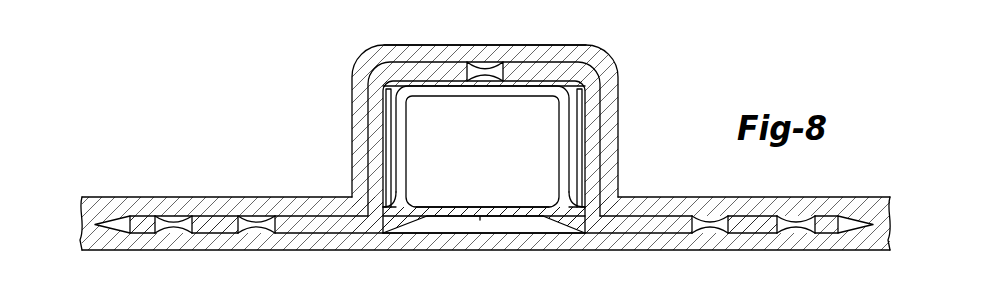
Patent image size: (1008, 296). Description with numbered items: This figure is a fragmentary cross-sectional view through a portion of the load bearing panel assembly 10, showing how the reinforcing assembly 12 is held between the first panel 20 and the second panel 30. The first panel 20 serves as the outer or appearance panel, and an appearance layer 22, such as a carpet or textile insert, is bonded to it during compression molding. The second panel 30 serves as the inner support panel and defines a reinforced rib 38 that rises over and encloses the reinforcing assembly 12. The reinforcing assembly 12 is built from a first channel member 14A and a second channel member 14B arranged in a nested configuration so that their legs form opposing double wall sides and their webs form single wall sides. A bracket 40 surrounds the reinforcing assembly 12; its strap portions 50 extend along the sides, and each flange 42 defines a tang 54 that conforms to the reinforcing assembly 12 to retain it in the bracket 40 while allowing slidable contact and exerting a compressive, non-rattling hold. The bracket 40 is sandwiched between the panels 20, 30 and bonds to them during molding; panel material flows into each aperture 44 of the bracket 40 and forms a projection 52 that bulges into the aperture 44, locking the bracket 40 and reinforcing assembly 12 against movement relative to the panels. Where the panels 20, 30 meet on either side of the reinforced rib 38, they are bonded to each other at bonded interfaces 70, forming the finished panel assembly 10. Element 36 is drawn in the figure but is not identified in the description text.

The panel assembly 10 is at (163, 105).
The reinforcing assembly 12 is at (481, 218).
The first channel member 14A is at (441, 97).
The second channel member 14B is at (525, 207).
The first panel 20 is at (710, 265).
The appearance layer 22 is at (808, 250).
The second panel 30 is at (657, 163).
The bottom layer 36 is at (484, 264).
The reinforced rib 38 is at (410, 45).
The bracket 40 is at (359, 106).
The flange 42 is at (317, 200).
The aperture 44 is at (163, 228).
The strap portion 50 is at (601, 112).
The projection 52 is at (168, 197).
The tang 54 is at (408, 226).
The bonded interface 70 is at (83, 197).